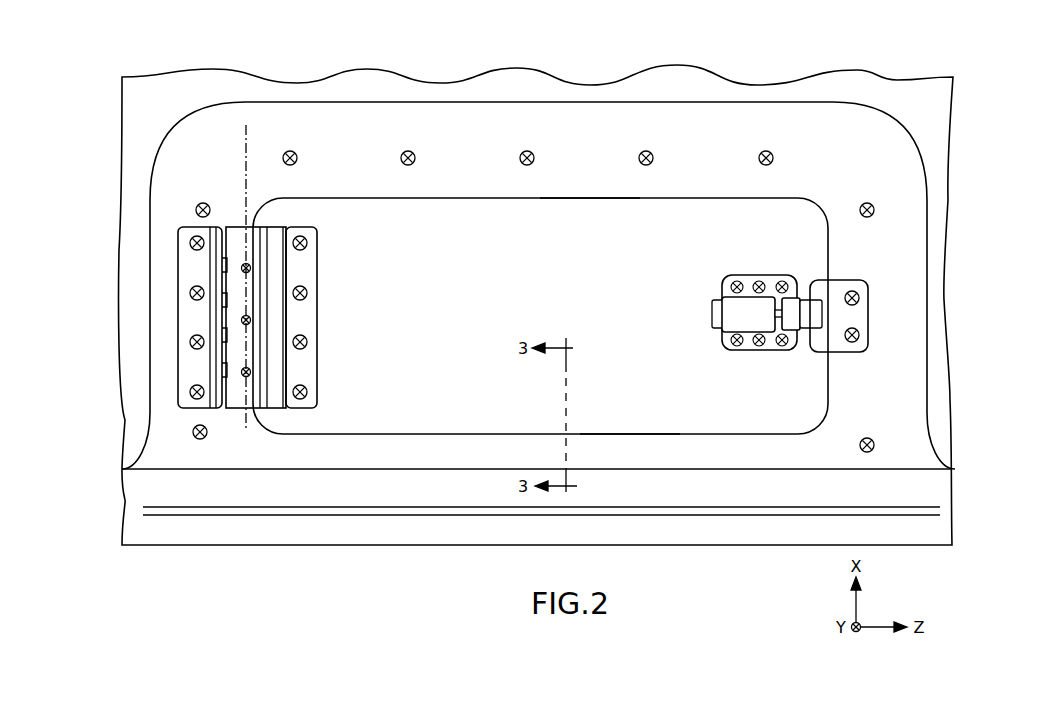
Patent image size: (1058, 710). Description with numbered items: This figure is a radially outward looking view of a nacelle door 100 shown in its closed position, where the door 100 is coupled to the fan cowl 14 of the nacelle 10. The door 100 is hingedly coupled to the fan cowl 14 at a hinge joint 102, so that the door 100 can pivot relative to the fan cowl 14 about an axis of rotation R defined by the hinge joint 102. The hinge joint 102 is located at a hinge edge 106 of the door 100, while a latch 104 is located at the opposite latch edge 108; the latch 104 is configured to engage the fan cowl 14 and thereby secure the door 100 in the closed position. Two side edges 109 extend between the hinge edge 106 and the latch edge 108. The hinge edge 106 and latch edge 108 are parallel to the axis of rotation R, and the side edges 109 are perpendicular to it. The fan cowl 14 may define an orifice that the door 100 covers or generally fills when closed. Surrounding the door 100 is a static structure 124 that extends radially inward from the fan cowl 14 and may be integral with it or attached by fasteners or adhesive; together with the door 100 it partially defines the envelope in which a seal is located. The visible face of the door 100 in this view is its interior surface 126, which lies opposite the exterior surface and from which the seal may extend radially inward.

The vehicle 10 is at (497, 276).
The fan cowl 14 is at (192, 105).
The door 100 is at (573, 326).
The hinge joint 102 is at (247, 312).
The latch 104 is at (788, 308).
The hinge edge 106 is at (255, 410).
The latch edge 108 is at (828, 265).
The side edges 109 is at (585, 198).
The static structure 124 is at (875, 133).
The interior surface 126 is at (454, 326).
The axis of rotation R is at (248, 148).